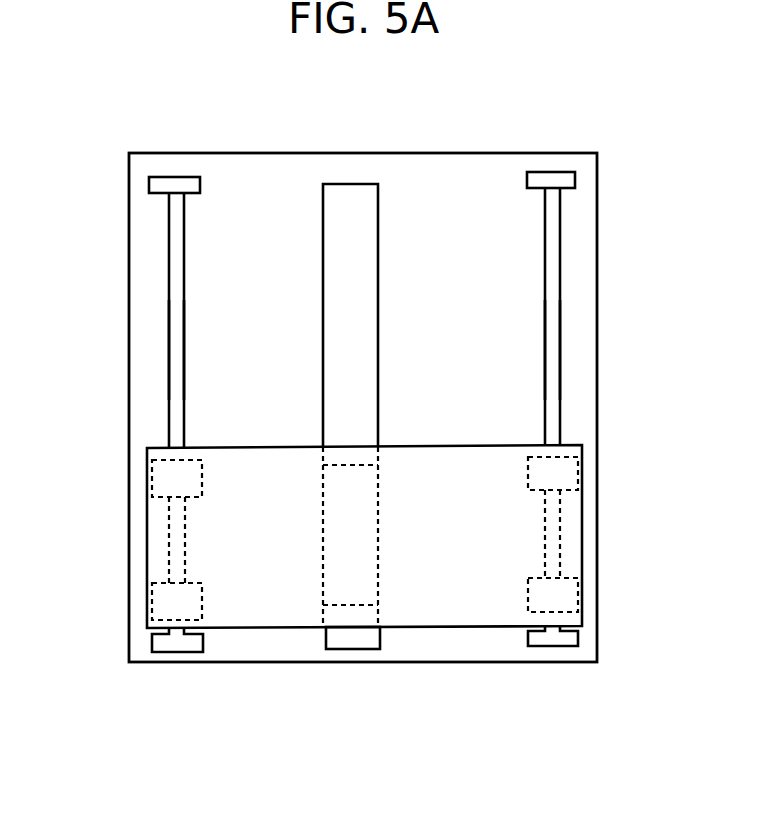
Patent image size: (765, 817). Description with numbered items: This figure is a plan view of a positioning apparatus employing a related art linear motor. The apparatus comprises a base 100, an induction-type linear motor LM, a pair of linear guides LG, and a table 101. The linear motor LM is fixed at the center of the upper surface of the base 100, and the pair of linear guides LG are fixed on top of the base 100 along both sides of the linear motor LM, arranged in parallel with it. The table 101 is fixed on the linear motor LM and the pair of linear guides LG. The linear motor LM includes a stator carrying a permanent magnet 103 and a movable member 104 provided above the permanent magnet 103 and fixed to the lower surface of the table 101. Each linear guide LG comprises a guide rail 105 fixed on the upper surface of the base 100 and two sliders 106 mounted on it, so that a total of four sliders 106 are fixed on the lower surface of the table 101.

The base 100 is at (458, 168).
The table 101 is at (500, 607).
The permanent magnet 103 is at (363, 640).
The movable member 104 is at (345, 595).
The guide rail 105 is at (168, 268).
The slider 106 is at (153, 493).
The linear guide LG is at (168, 358).
The induction-type linear motor LM is at (324, 634).